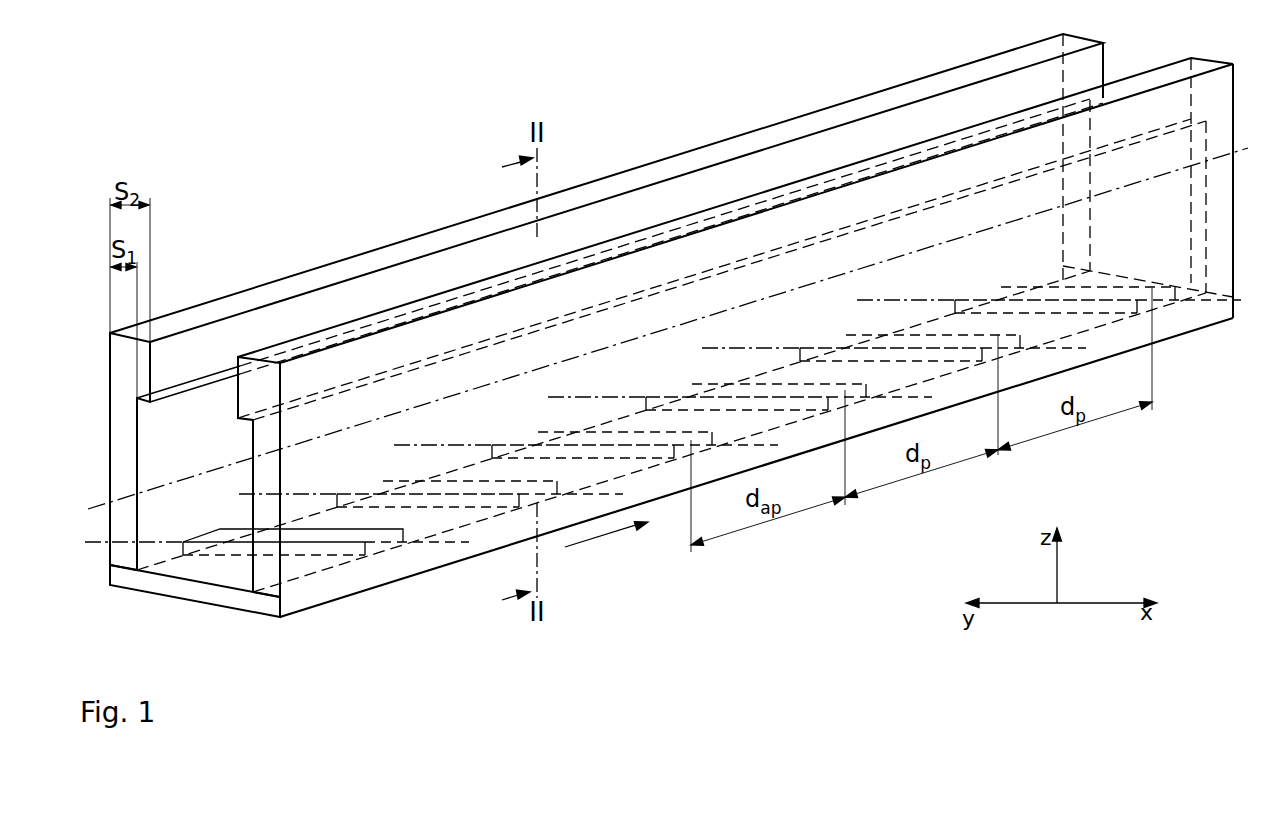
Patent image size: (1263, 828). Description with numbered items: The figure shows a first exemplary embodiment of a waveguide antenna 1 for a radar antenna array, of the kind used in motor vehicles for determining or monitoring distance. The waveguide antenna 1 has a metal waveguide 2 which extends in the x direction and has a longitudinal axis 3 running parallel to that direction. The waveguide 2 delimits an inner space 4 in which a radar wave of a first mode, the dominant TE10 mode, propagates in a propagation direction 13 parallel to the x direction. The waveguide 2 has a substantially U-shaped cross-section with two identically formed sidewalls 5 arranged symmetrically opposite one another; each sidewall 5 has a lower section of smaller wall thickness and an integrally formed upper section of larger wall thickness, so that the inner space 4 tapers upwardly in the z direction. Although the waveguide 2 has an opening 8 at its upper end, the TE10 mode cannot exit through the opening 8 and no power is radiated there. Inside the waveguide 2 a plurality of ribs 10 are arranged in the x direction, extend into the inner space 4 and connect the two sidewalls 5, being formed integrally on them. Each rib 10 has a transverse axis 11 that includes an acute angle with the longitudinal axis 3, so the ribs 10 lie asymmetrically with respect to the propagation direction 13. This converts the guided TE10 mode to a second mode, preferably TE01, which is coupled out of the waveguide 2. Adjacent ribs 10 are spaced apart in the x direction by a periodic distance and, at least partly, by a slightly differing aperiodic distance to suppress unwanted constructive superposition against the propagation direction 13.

The waveguide antenna 1 is at (667, 353).
The waveguide 2 is at (105, 487).
The longitudinal axis 3 is at (208, 473).
The inner space 4 is at (197, 512).
The sidewalls 5 is at (120, 517).
The opening 8 is at (332, 312).
The ribs 10 is at (238, 563).
The transverse axis 11 is at (398, 537).
The propagation direction 13 is at (603, 537).